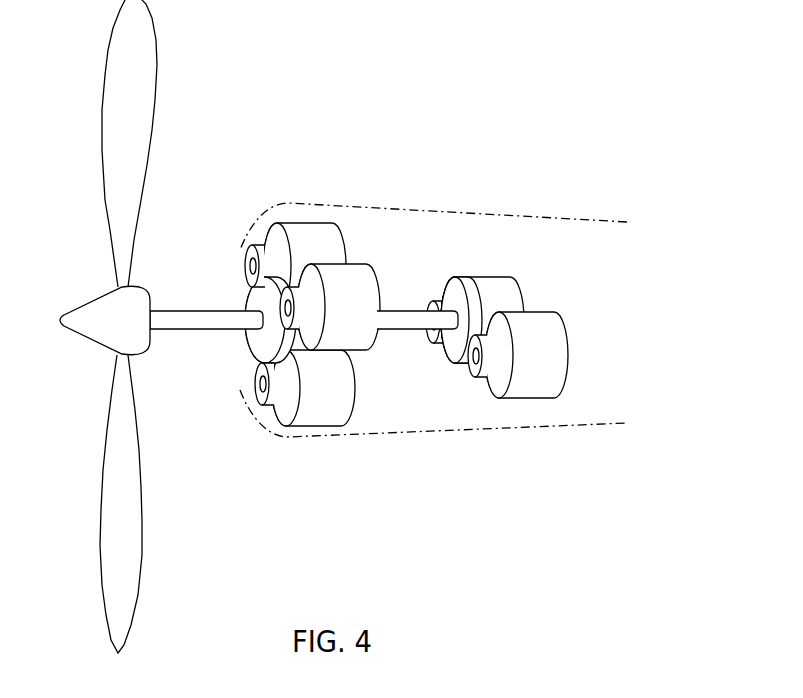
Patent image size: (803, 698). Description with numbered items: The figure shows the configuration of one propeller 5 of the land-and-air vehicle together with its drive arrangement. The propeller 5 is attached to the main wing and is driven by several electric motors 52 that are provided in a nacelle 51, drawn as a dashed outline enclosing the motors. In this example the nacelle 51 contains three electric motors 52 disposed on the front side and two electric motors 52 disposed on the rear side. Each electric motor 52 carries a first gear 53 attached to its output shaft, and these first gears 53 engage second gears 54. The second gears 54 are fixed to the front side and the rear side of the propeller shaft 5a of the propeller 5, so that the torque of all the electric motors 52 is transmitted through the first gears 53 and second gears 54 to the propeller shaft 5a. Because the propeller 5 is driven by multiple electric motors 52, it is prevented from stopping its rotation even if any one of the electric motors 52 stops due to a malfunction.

The propeller 5 is at (110, 52).
The propeller shaft 5a is at (198, 315).
The nacelle 51 is at (613, 215).
The electric motor 52 is at (313, 233).
The first gear 53 is at (275, 407).
The second gear 54 is at (247, 345).